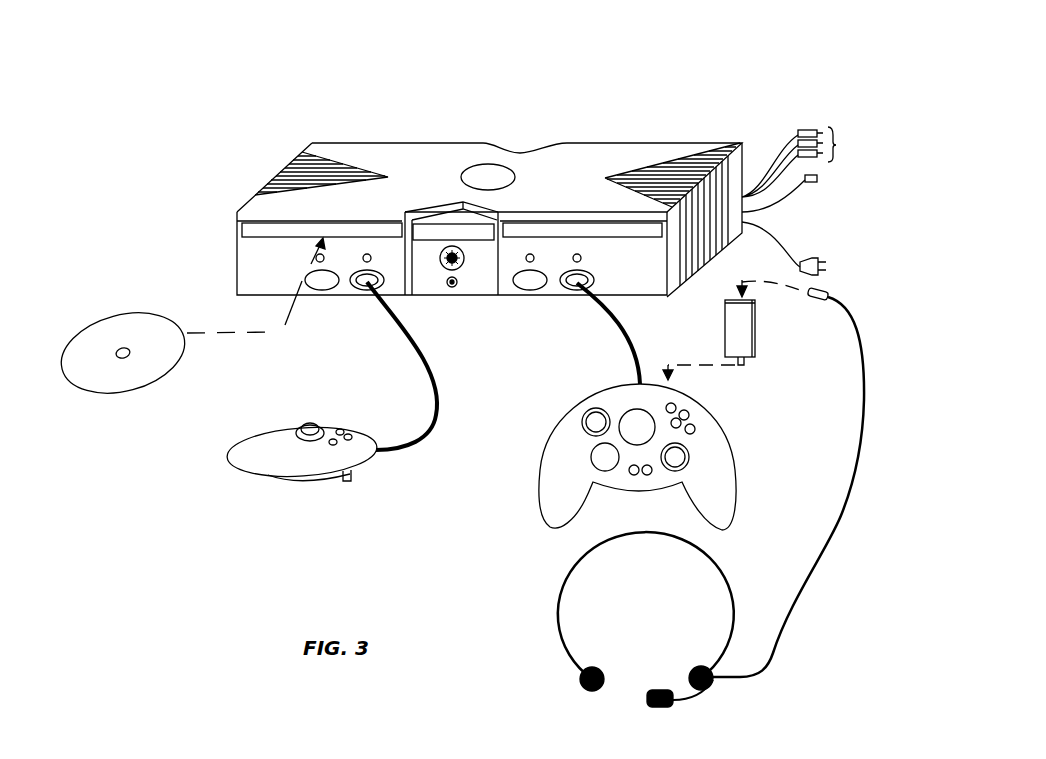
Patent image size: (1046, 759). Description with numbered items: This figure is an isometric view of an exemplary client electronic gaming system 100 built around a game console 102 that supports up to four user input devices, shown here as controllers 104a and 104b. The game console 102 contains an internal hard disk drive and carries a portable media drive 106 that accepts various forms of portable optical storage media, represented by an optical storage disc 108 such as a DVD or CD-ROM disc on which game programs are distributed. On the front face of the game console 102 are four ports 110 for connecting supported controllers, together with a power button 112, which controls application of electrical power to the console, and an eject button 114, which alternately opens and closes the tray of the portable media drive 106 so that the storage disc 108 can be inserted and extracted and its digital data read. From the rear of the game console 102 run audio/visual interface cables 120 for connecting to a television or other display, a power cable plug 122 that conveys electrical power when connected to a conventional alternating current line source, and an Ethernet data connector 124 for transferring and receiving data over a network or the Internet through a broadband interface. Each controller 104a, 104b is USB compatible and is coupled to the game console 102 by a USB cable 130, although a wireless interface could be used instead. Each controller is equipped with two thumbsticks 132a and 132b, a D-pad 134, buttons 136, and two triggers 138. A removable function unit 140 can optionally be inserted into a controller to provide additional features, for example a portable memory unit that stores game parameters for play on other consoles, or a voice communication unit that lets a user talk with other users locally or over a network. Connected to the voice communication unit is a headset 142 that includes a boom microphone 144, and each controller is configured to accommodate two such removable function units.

The electronic gaming system 100 is at (628, 72).
The game console 102 is at (350, 142).
The controller 104a is at (300, 478).
The controller 104b is at (548, 521).
The portable media drive 106 is at (252, 230).
The optical storage disc 108 is at (132, 388).
The ports 110 is at (363, 288).
The power button 112 is at (454, 290).
The eject button 114 is at (452, 246).
The audio/visual (A/V) interface cables 120 is at (808, 128).
The power cable plug 122 is at (817, 263).
The Ethernet data connector 124 is at (778, 192).
The USB cables 130 is at (428, 376).
The thumbstick 132a is at (582, 421).
The thumbstick 132b is at (312, 423).
The D-pad 134 is at (590, 457).
The buttons 136 is at (686, 414).
The triggers 138 is at (350, 477).
The removable function unit 140 is at (757, 357).
The headset 142 is at (558, 638).
The boom microphone 144 is at (660, 708).